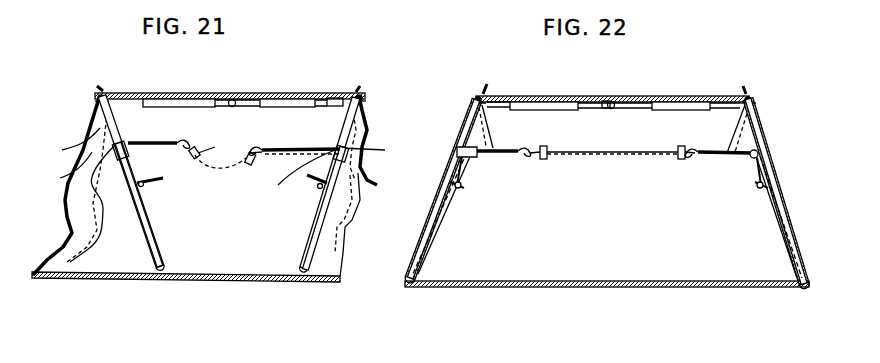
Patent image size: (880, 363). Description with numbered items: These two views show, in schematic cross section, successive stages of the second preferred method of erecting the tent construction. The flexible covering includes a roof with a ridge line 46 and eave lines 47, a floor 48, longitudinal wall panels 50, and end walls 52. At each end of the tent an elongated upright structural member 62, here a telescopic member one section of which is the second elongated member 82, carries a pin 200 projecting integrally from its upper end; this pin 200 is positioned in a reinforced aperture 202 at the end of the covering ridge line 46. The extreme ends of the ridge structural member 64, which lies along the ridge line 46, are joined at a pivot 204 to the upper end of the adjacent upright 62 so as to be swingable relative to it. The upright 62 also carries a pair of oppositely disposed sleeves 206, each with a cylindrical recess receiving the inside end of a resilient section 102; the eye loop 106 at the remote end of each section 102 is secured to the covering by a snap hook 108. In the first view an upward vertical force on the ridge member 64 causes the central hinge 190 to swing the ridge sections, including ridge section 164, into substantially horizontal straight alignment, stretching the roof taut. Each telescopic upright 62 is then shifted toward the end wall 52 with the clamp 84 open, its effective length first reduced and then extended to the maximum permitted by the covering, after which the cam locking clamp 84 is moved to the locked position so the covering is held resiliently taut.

In FIG. 21, the ridge line 46 is at (215, 99).
In FIG. 22, the ridge line 46 is at (545, 101).
In FIG. 21, the eave lines 47 is at (207, 160).
In FIG. 22, the eave lines 47 is at (585, 155).
In FIG. 21, the floor 48 is at (215, 283).
In FIG. 22, the floor 48 is at (578, 288).
In FIG. 21, the longitudinal wall panels 50 is at (243, 260).
In FIG. 22, the longitudinal wall panels 50 is at (621, 262).
In FIG. 21, the end wall 52 is at (75, 224).
In FIG. 21, the upright structural member 62 is at (146, 252).
In FIG. 22, the upright structural member 62 is at (428, 207).
In FIG. 21, the ridge structural member 64 is at (136, 93).
In FIG. 22, the ridge structural member 64 is at (500, 97).
In FIG. 21, the second elongated member 82 is at (155, 228).
In FIG. 22, the second elongated member 82 is at (440, 236).
In FIG. 21, the clamp 84 is at (148, 184).
In FIG. 22, the clamp 84 is at (460, 195).
In FIG. 21, the resilient section 102 is at (142, 140).
In FIG. 22, the resilient section 102 is at (503, 148).
In FIG. 21, the eye loop 106 is at (270, 165).
In FIG. 22, the eye loop 106 is at (510, 158).
In FIG. 21, the snap hook 108 is at (252, 166).
In FIG. 22, the snap hook 108 is at (552, 151).
In FIG. 21, the ridge section 164 is at (344, 96).
In FIG. 22, the ridge section 164 is at (722, 101).
In FIG. 21, the central hinge 190 is at (240, 101).
In FIG. 22, the central hinge 190 is at (616, 101).
In FIG. 21, the pin 200 is at (103, 92).
In FIG. 22, the pin 200 is at (487, 86).
In FIG. 21, the reinforced aperture 202 is at (99, 97).
In FIG. 22, the reinforced aperture 202 is at (476, 92).
In FIG. 21, the pivot 204 is at (99, 102).
In FIG. 22, the pivot 204 is at (475, 96).
In FIG. 21, the sleeves 206 is at (400, 175).
In FIG. 22, the sleeves 206 is at (478, 132).